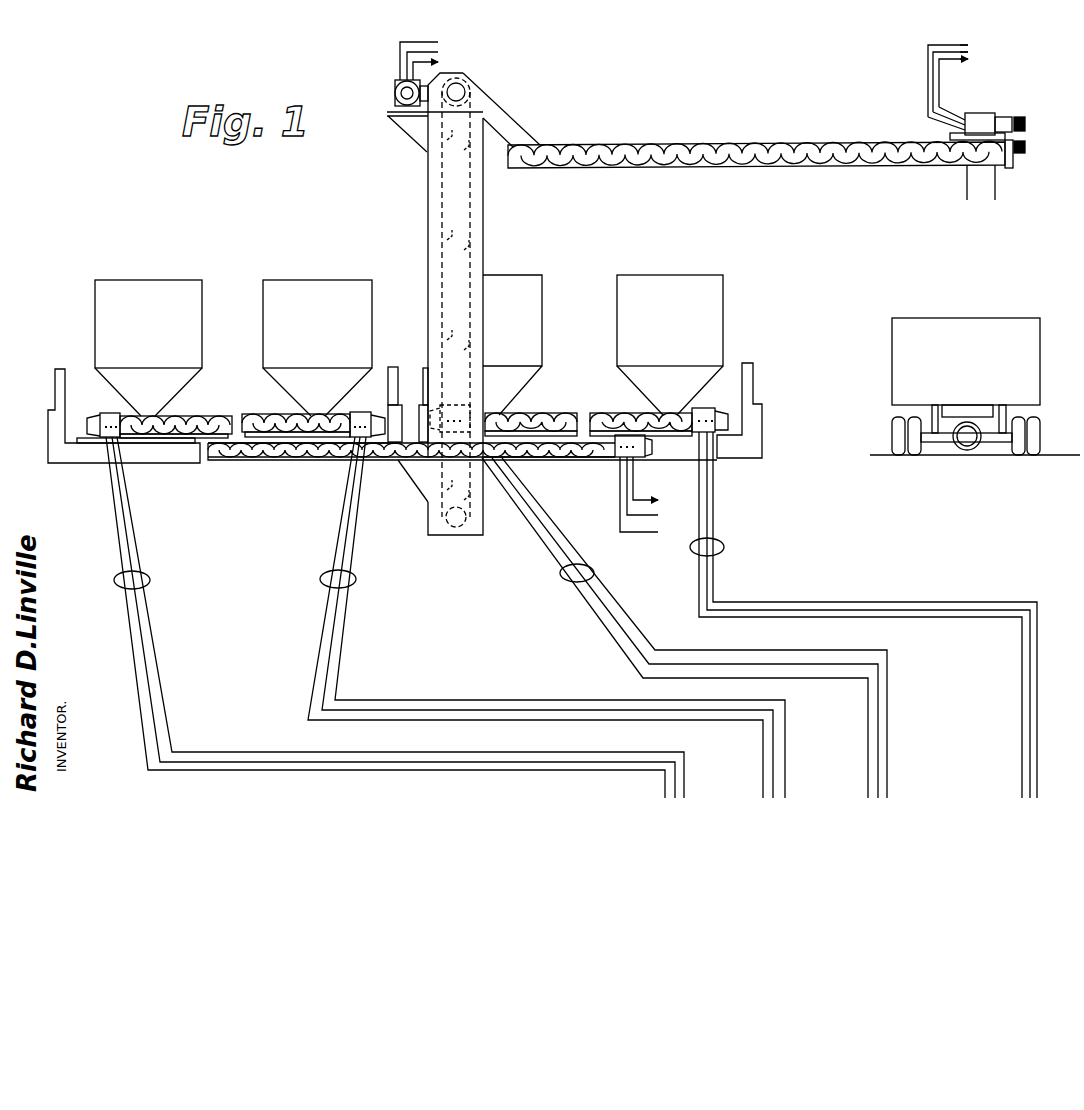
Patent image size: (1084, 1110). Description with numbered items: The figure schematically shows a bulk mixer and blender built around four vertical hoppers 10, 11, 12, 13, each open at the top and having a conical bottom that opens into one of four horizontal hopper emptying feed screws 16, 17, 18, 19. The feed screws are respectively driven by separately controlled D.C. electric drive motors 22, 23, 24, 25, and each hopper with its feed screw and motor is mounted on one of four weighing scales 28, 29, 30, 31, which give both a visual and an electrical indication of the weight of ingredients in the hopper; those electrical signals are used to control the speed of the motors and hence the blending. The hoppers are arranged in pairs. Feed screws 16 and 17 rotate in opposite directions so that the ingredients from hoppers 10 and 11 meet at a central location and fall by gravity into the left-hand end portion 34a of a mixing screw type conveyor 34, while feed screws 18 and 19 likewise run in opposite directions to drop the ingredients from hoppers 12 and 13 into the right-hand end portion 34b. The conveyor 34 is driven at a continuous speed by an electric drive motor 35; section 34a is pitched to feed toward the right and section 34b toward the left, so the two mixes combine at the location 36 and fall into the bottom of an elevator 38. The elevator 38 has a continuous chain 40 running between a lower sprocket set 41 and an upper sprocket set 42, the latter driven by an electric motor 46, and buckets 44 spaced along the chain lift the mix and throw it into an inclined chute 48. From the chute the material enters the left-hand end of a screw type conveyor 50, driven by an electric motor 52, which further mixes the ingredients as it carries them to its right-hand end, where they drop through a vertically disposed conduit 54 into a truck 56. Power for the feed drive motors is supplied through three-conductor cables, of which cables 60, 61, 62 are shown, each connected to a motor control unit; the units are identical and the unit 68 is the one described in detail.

The vertical hopper 10 is at (159, 303).
The vertical hopper 11 is at (329, 303).
The vertical hopper 12 is at (508, 298).
The vertical hopper 13 is at (674, 298).
The hopper emptying feed screw 16 is at (180, 416).
The hopper emptying feed screw 17 is at (278, 414).
The hopper emptying feed screw 18 is at (530, 411).
The hopper emptying feed screw 19 is at (627, 411).
The D.C. electric drive motor 22 is at (108, 412).
The D.C. electric drive motor 23 is at (377, 401).
The D.C. electric drive motor 24 is at (480, 395).
The D.C. electric drive motor 25 is at (722, 408).
The weighing scale 28 is at (52, 437).
The weighing scale 29 is at (400, 360).
The weighing scale 30 is at (424, 372).
The weighing scale 31 is at (752, 376).
The mixing screw type conveyor 34 is at (289, 463).
The left-hand end portion 34a is at (235, 461).
The right-hand end portion 34b is at (557, 458).
The electric drive motor 35 is at (640, 452).
The meeting location 36 is at (418, 455).
The elevator 38 is at (448, 317).
The continuous chain 40 is at (483, 223).
The sprocket set 41 is at (440, 536).
The sprocket set 42 is at (485, 86).
The buckets 44 is at (484, 266).
The electric motor 46 is at (395, 98).
The inclined chute 48 is at (516, 121).
The screw type conveyor 50 is at (660, 145).
The electric motor 52 is at (983, 113).
The vertically disposed conduit 54 is at (963, 187).
The truck 56 is at (1035, 370).
The cable 60 is at (150, 580).
The cable 61 is at (321, 579).
The cable 62 is at (563, 579).
The motor control unit 68 is at (724, 547).